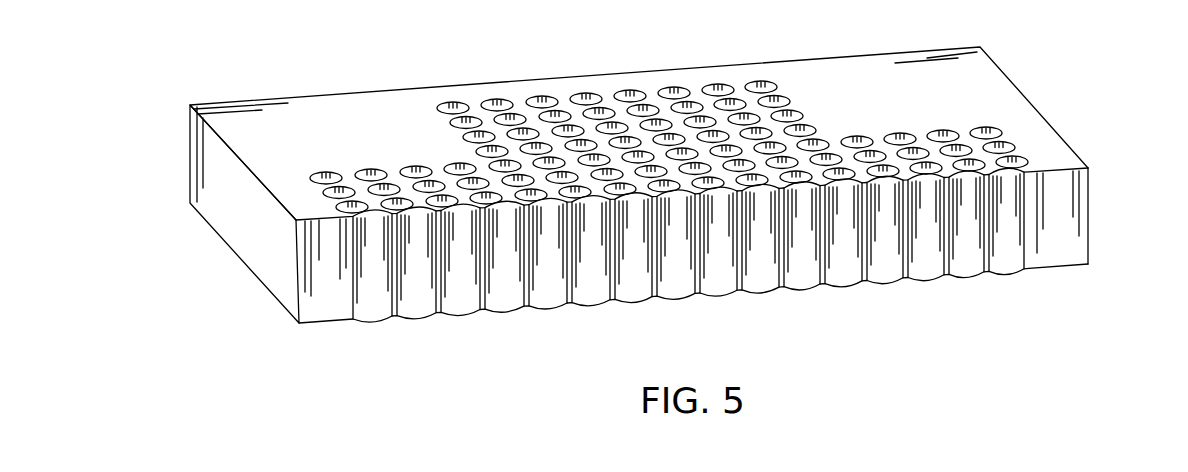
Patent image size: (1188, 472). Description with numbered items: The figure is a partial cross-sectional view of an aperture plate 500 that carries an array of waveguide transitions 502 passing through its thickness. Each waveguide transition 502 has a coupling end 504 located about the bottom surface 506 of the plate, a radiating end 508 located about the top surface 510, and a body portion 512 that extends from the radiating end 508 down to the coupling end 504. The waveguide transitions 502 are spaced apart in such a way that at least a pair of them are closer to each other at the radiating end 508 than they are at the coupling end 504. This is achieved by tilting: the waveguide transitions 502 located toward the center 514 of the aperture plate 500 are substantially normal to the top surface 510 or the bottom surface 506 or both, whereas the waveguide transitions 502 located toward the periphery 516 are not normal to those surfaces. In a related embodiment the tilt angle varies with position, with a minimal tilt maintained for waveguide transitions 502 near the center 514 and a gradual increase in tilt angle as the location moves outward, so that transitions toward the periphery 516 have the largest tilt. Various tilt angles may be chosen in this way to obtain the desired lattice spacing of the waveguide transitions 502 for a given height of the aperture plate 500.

The aperture plate 500 is at (525, 46).
The waveguide transitions 502 is at (785, 312).
The coupling end 504 is at (1052, 161).
The bottom surface 506 is at (957, 65).
The radiating end 508 is at (883, 277).
The top surface 510 is at (1088, 264).
The body portion 512 is at (960, 225).
The center 514 is at (678, 172).
The periphery 516 is at (336, 206).